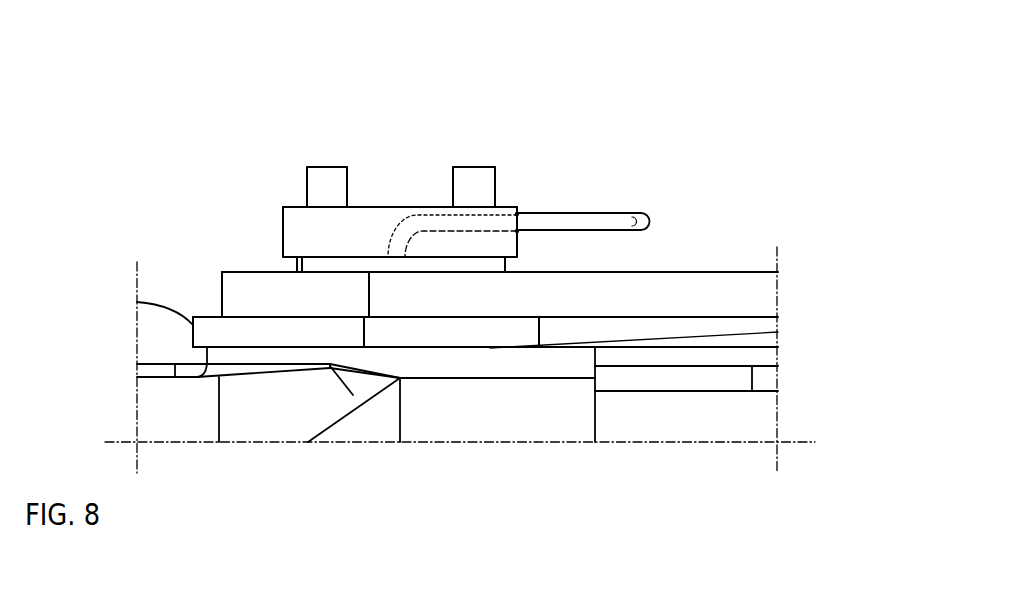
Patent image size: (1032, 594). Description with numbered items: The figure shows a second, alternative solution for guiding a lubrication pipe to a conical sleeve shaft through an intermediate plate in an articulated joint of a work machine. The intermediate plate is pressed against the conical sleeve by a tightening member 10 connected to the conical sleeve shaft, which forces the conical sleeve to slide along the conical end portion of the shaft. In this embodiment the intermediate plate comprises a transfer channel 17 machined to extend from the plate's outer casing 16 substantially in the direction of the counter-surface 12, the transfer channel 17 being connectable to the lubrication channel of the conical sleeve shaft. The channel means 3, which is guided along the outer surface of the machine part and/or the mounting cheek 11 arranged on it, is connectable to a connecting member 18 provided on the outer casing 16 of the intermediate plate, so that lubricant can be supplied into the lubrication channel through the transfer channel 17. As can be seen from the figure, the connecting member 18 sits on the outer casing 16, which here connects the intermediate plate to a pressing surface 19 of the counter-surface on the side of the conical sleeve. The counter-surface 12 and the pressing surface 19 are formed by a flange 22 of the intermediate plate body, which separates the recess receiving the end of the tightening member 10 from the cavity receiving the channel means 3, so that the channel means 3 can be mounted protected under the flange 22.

The channel means 3 is at (617, 213).
The tightening member 10 is at (478, 165).
The mounting cheek 11 is at (737, 283).
The counter-surface 12 is at (293, 203).
The outer casing 16 is at (248, 232).
The transfer channel 17 is at (427, 222).
The connecting member 18 is at (517, 214).
The pressing surface 19 is at (455, 259).
The flange 22 is at (310, 223).